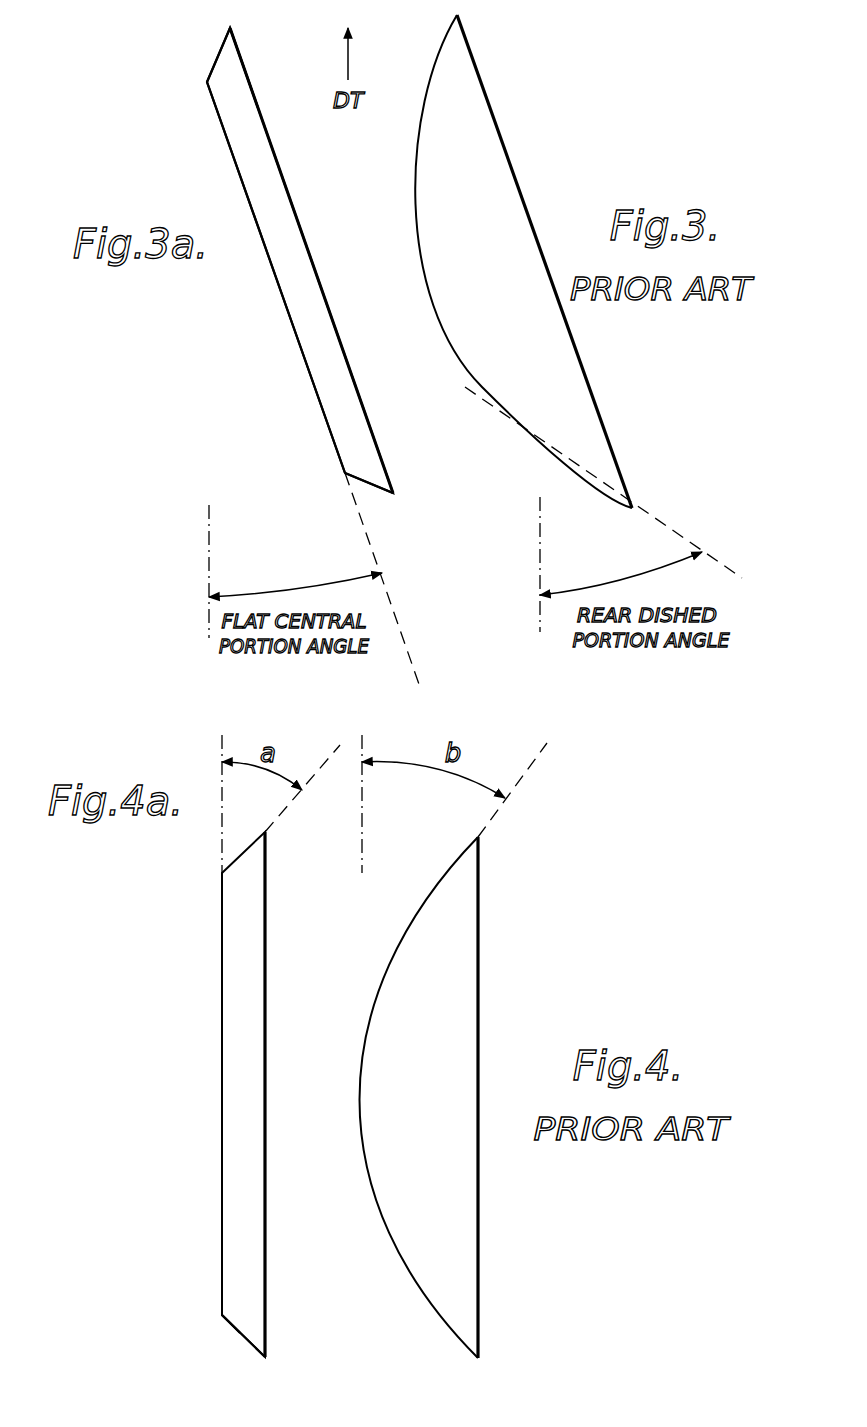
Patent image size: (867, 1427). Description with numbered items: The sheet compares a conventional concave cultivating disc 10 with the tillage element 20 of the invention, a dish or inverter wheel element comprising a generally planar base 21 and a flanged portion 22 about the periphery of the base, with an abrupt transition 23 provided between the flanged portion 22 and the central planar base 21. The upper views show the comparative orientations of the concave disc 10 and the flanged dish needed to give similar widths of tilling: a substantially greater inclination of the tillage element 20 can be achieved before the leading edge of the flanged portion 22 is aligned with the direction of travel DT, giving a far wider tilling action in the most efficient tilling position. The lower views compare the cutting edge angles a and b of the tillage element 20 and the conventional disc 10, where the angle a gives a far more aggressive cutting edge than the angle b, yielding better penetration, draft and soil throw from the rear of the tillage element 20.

In FIG. 3, the concave cultivating disc 10 is at (513, 170).
In FIG. 4, the concave cultivating disc 10 is at (478, 953).
In FIG. 3A, the tillage element 20 is at (236, 165).
In FIG. 4A, the tillage element 20 is at (265, 905).
In FIG. 3A, the planar base 21 is at (282, 297).
In FIG. 4A, the planar base 21 is at (222, 1036).
In FIG. 3A, the flanged portion 22 is at (214, 62).
In FIG. 4A, the flanged portion 22 is at (250, 1343).
In FIG. 3A, the abrupt transition 23 is at (345, 475).
In FIG. 4A, the abrupt transition 23 is at (222, 1313).